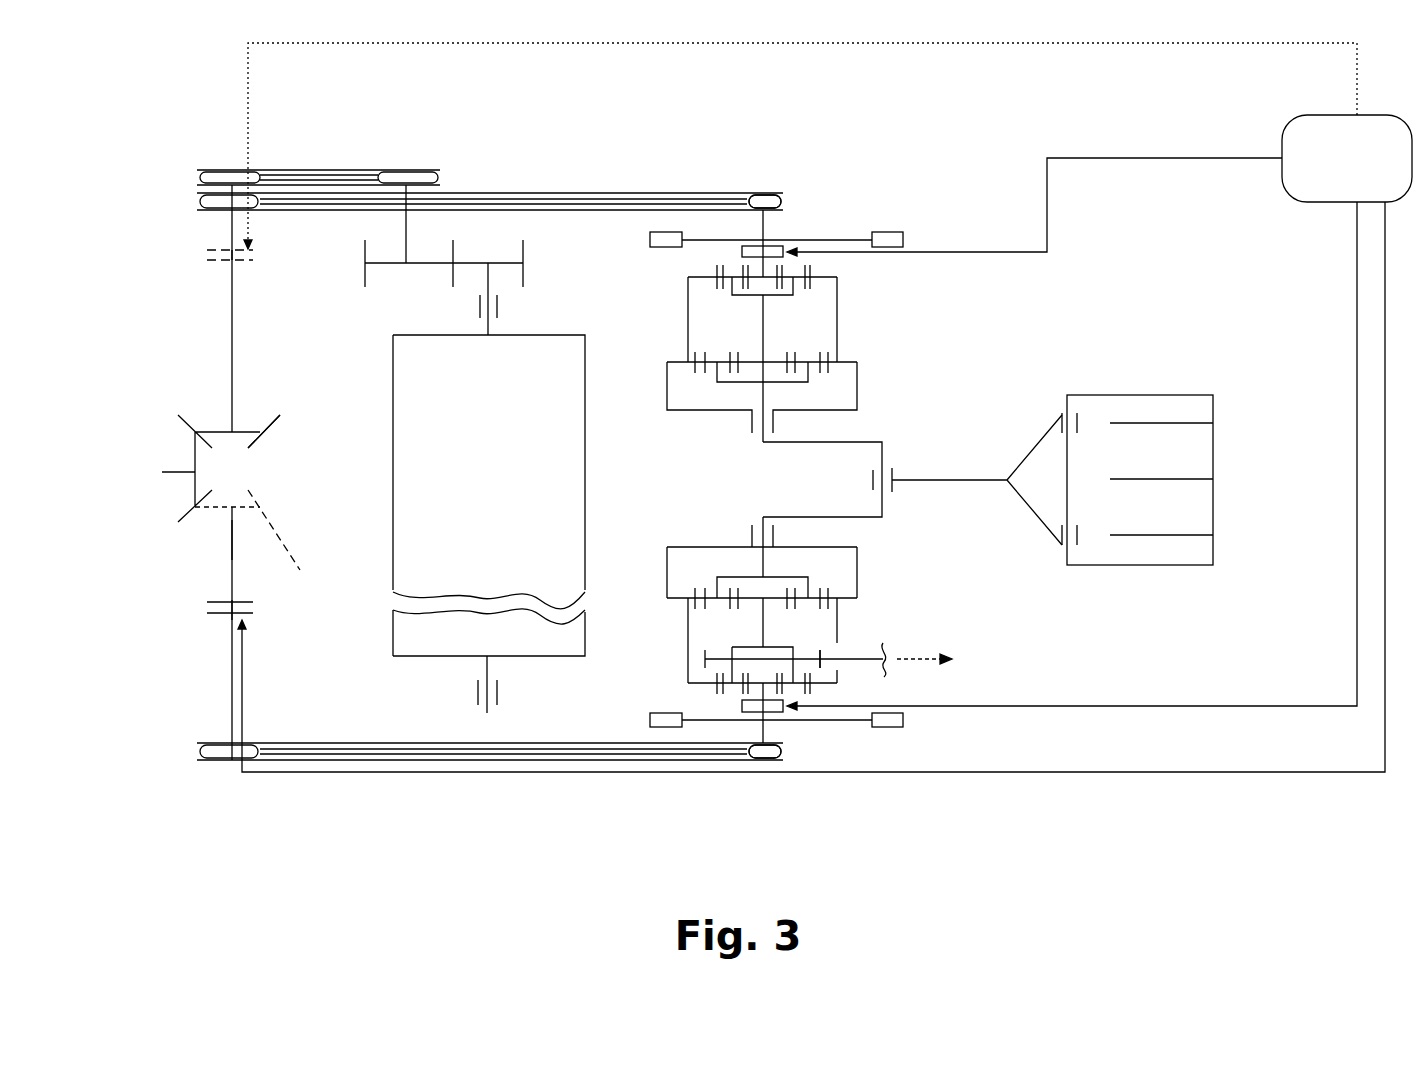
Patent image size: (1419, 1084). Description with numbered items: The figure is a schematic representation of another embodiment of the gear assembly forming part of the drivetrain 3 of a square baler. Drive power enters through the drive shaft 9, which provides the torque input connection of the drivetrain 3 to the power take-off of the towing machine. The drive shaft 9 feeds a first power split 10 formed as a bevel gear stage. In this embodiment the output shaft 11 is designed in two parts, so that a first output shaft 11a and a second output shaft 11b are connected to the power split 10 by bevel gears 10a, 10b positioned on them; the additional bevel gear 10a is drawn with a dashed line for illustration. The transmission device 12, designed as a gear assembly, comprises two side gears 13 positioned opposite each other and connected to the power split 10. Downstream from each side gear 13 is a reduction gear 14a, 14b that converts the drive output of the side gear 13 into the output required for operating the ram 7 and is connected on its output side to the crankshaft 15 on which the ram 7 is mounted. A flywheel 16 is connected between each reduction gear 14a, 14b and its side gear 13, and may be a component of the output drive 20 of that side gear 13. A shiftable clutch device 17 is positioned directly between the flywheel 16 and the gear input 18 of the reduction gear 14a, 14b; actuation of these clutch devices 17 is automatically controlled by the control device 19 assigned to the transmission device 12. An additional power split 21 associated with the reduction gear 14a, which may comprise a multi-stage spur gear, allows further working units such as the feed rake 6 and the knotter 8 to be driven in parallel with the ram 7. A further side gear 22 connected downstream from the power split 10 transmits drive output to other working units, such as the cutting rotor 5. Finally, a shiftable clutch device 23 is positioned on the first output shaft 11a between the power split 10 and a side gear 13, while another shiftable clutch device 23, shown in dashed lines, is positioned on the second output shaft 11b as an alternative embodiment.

The drivetrain 3 is at (213, 545).
The cutting rotor 5 is at (412, 646).
The feed rake 6 is at (937, 699).
The ram 7 is at (1167, 410).
The knotter 8 is at (989, 699).
The drive shaft 9 is at (162, 472).
The first power split 10 is at (205, 425).
The bevel gear 10a is at (288, 550).
The bevel gear 10b is at (247, 430).
The output shaft 11 is at (227, 678).
The first output shaft 11a is at (228, 623).
The second output shaft 11b is at (230, 278).
The transmission device 12 is at (845, 295).
The side gear 13 is at (203, 202).
The reduction gear 14a is at (707, 628).
The reduction gear 14b is at (705, 323).
The crankshaft 15 is at (883, 450).
The flywheel 16 is at (887, 234).
The shiftable clutch device 17 is at (743, 248).
The gear input 18 is at (742, 250).
The control device 19 is at (1341, 173).
The output drive 20 is at (757, 200).
The additional power split 21 is at (820, 657).
The further side gear 22 is at (220, 177).
The shiftable clutch device 23 is at (257, 260).